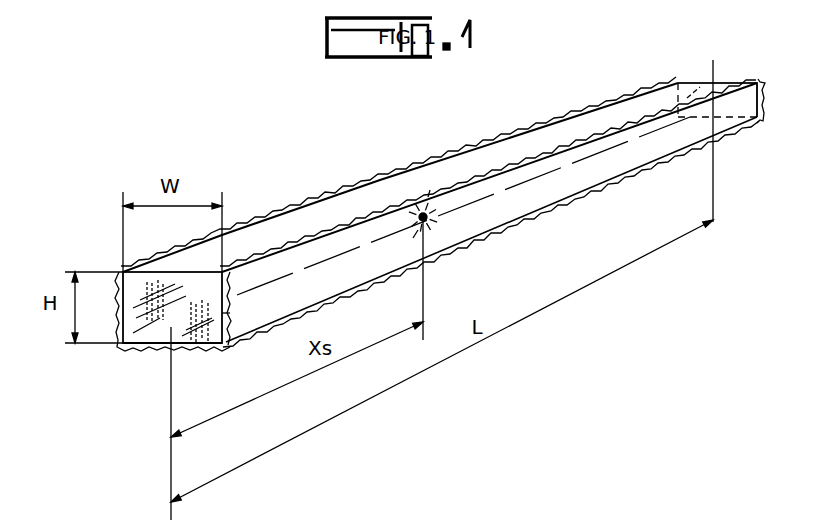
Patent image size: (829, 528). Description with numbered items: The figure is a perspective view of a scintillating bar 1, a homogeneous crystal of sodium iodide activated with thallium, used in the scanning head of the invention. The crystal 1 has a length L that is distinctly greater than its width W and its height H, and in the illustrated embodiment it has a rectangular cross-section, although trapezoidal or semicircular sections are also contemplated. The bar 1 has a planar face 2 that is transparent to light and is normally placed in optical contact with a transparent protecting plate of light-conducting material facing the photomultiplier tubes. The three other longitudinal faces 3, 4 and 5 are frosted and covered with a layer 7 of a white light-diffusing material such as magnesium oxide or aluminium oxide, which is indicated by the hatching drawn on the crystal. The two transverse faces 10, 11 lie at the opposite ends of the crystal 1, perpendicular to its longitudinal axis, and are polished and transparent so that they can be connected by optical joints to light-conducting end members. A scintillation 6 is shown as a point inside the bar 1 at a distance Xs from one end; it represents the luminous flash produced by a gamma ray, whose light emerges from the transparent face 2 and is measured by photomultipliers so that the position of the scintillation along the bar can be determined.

The scintillating bar 1 is at (350, 170).
The planar face 2 is at (288, 225).
The face 3 is at (222, 313).
The face 4 is at (157, 343).
The face 5 is at (117, 288).
The scintillation 6 is at (424, 210).
The layer of light-diffusing material 7 is at (205, 343).
The transverse face 10 is at (143, 303).
The transverse face 11 is at (703, 82).